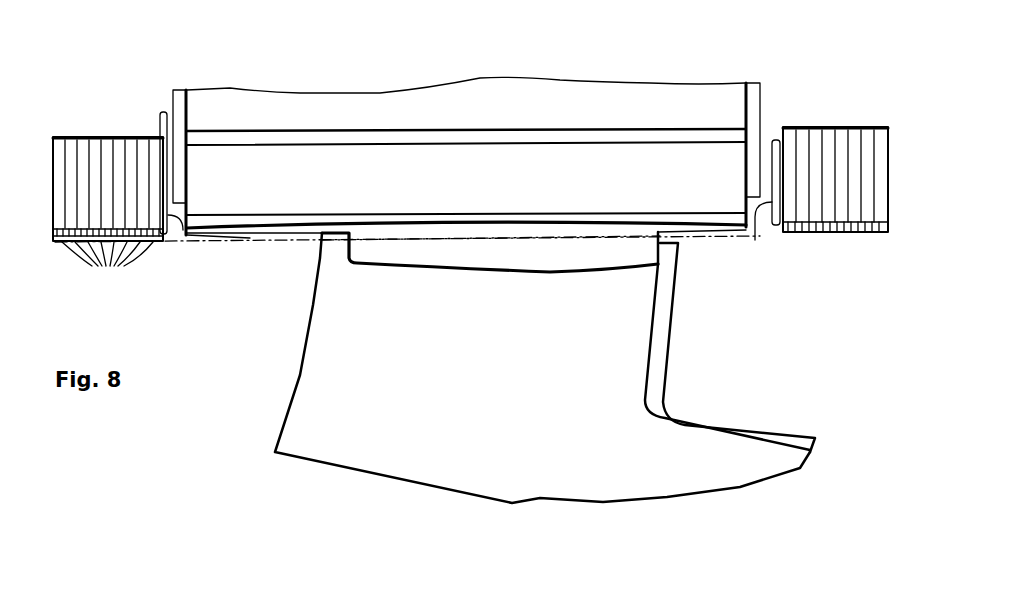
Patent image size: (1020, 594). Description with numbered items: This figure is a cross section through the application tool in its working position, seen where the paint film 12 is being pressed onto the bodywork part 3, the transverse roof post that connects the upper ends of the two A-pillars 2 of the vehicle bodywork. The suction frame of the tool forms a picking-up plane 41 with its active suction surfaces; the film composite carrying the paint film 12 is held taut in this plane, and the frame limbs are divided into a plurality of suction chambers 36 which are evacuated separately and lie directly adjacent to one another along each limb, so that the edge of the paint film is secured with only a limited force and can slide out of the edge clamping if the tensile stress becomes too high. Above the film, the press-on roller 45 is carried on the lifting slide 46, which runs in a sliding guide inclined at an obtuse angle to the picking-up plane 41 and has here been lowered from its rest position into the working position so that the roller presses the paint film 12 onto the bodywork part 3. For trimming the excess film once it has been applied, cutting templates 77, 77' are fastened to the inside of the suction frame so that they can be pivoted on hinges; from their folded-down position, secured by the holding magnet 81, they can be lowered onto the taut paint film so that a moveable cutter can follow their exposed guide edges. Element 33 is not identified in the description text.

The A-pillar 2 is at (703, 460).
The bodywork part 3 is at (492, 225).
The paint film 12 is at (207, 242).
The brush strip 33 is at (826, 124).
The suction chamber 36 is at (108, 215).
The picking-up plane 41 is at (430, 238).
The press-on roller 45 is at (439, 191).
The lifting slide 46 is at (497, 117).
The cutting template 77 is at (185, 268).
The cutting template 77' is at (757, 255).
The holding magnet 81 is at (155, 168).